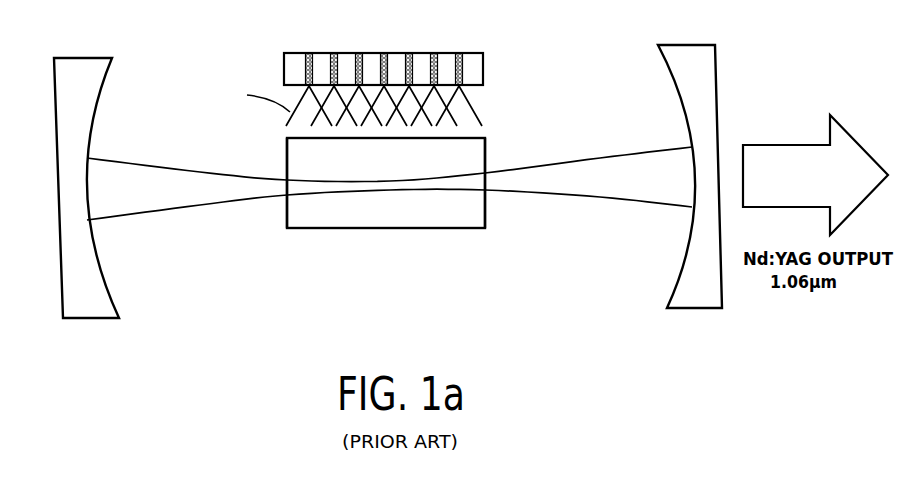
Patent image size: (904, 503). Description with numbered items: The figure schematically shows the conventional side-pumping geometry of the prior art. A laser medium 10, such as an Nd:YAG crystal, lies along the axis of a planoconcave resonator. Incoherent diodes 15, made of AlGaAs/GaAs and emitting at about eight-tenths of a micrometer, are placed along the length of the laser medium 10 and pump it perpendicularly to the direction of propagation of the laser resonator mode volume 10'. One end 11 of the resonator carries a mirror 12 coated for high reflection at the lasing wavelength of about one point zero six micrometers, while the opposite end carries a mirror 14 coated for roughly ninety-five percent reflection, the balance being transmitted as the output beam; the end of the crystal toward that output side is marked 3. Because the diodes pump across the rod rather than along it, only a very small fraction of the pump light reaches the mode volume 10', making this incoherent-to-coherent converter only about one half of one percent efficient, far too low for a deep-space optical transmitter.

The incoherent diodes 15 is at (487, 62).
The laser medium 10 is at (415, 184).
The laser resonator mode volume 10' is at (389, 182).
The one end 11 is at (288, 212).
The output end face of crystal 3 is at (486, 212).
The mirror 12 is at (105, 282).
The mirror 14 is at (685, 265).